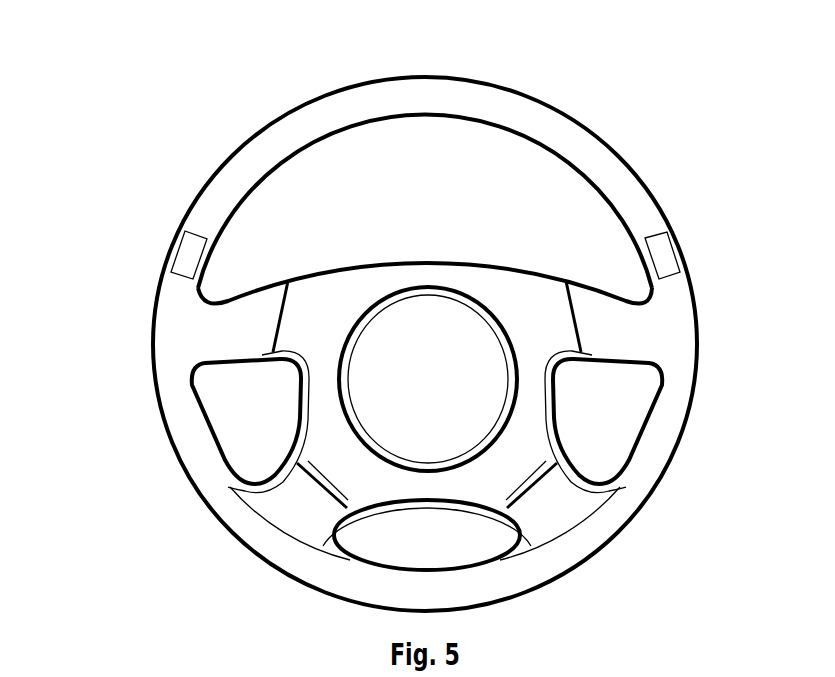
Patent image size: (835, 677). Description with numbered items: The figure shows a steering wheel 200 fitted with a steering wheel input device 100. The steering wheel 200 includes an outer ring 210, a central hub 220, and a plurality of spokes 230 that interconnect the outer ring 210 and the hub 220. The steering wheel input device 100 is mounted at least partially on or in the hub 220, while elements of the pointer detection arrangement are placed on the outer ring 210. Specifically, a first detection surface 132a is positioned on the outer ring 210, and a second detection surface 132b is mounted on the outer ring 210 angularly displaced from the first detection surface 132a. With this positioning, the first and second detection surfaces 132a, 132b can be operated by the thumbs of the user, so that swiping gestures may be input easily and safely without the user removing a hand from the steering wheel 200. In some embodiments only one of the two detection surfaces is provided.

The steering wheel 200 is at (664, 150).
The outer ring 210 is at (540, 102).
The hub 220 is at (409, 262).
The spokes 230 is at (590, 282).
The steering wheel input device 100 is at (352, 289).
The first detection surface 132a is at (177, 258).
The second detection surface 132b is at (687, 265).